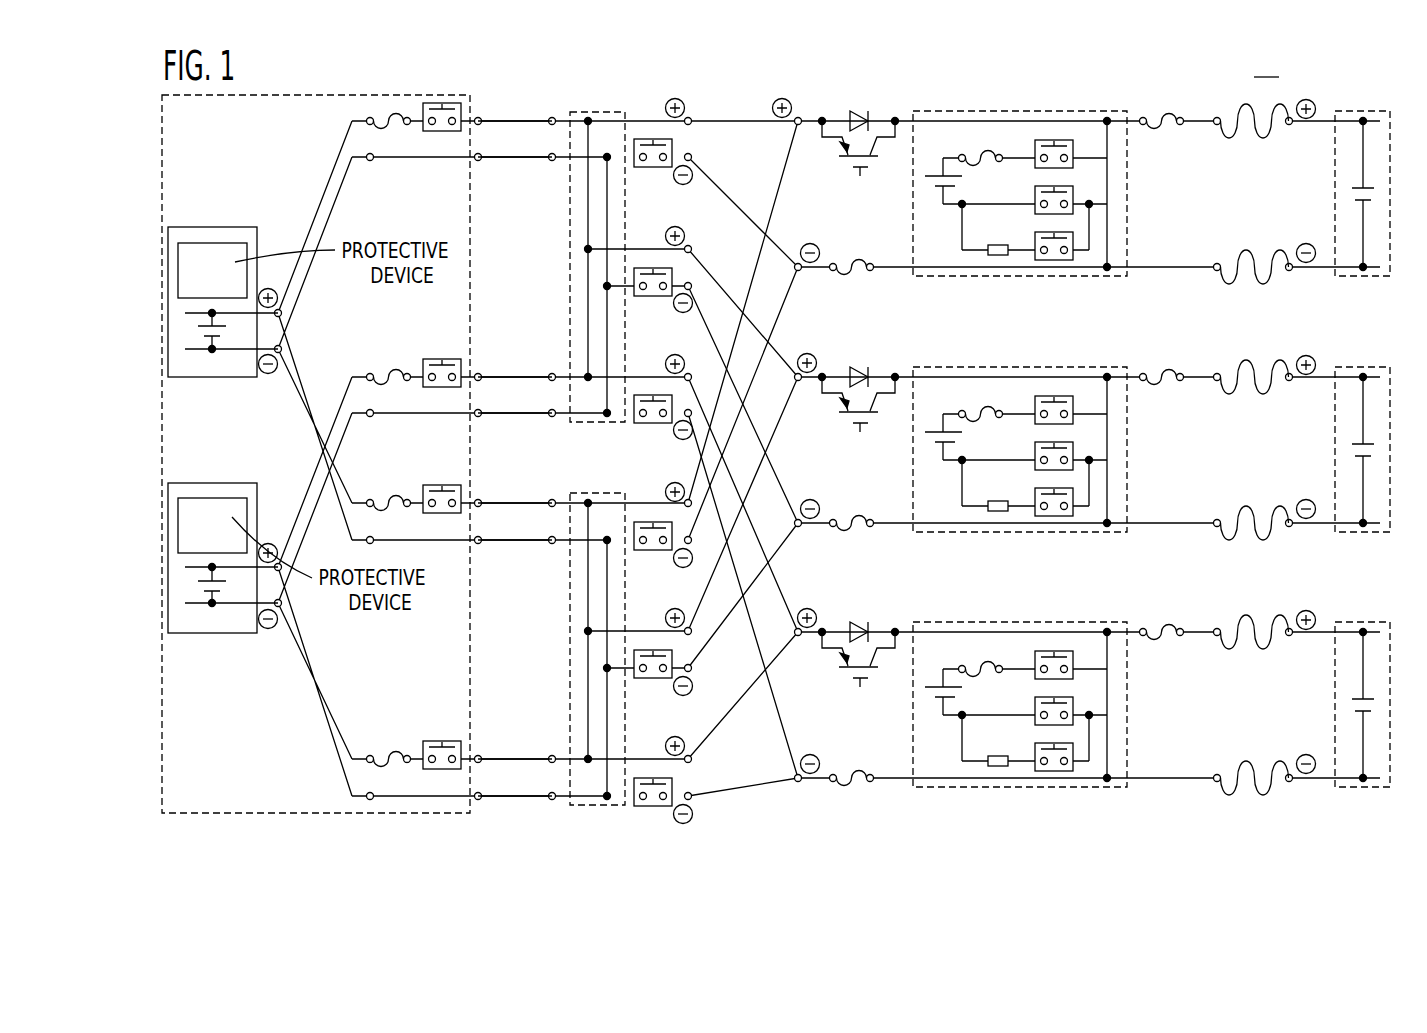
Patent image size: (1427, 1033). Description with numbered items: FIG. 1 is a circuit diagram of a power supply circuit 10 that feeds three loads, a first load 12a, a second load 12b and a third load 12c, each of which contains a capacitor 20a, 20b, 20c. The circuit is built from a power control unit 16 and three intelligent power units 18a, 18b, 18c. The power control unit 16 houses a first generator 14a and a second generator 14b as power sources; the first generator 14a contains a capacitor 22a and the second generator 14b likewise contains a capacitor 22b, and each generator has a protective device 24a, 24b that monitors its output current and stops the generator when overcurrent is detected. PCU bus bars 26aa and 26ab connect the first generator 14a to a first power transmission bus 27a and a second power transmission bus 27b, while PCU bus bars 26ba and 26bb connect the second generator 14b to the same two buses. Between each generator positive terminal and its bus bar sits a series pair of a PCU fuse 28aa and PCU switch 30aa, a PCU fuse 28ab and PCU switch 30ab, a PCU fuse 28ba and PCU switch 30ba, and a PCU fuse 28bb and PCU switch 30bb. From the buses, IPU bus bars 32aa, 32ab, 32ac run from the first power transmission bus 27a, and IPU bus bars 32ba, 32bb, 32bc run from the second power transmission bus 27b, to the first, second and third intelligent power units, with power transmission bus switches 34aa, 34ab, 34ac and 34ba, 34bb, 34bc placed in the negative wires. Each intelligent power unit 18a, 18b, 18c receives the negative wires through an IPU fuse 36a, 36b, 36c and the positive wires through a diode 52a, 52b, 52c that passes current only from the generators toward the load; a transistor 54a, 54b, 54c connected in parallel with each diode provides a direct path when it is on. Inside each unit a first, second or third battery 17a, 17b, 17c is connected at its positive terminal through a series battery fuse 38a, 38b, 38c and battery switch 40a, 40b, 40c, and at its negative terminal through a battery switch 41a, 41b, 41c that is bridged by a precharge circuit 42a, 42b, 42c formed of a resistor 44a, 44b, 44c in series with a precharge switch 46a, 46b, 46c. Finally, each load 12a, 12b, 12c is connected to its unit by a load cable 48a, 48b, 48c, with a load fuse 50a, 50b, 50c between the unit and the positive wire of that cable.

The power supply circuit 10 is at (1266, 64).
The first load 12a is at (1349, 111).
The second load 12b is at (1344, 427).
The third load 12c is at (1344, 682).
The first generator 14a is at (237, 227).
The second generator 14b is at (237, 483).
The power control unit 16 is at (287, 94).
The first battery 17a is at (933, 184).
The second battery 17b is at (942, 465).
The third battery 17c is at (943, 720).
The first intelligent power unit 18a is at (997, 111).
The second intelligent power unit 18b is at (1020, 421).
The third intelligent power unit 18c is at (1020, 676).
The capacitor 20a is at (1350, 197).
The capacitor 20b is at (1324, 448).
The capacitor 20c is at (1325, 703).
The capacitor 22a is at (188, 330).
The battery 22b is at (188, 585).
The protective device 24a is at (197, 243).
The protective device 24b is at (197, 498).
The PCU bus bar 26aa is at (527, 156).
The PCU bus bar 26ab is at (527, 539).
The PCU bus bar 26ba is at (527, 412).
The PCU bus bar 26bb is at (527, 795).
The first power transmission bus 27a is at (595, 112).
The second power transmission bus 27b is at (570, 590).
The PCU fuse 28aa is at (392, 110).
The PCU fuse 28ab is at (392, 492).
The PCU fuse 28ba is at (392, 366).
The PCU fuse 28bb is at (392, 748).
The PCU switch 30aa is at (443, 103).
The PCU switch 30ab is at (443, 485).
The PCU switch 30ba is at (443, 359).
The PCU switch 30bb is at (443, 741).
The IPU bus bar 32aa is at (703, 162).
The IPU bus bar 32ab is at (706, 294).
The IPU bus bar 32ac is at (701, 424).
The IPU bus bar 32ba is at (712, 490).
The IPU bus bar 32bb is at (700, 615).
The IPU bus bar 32bc is at (712, 790).
The power transmission bus switch 34aa is at (657, 168).
The power transmission bus switch 34ab is at (634, 278).
The power transmission bus switch 34ac is at (650, 424).
The power transmission bus switch 34ba is at (657, 551).
The power transmission bus switch 34bb is at (634, 658).
The power transmission bus switch 34bc is at (655, 777).
The IPU fuse 36a is at (851, 259).
The IPU fuse 36b is at (854, 501).
The IPU fuse 36c is at (854, 756).
The battery fuse 38a is at (993, 153).
The battery fuse 38b is at (966, 379).
The battery fuse 38c is at (967, 634).
The battery switch 40a is at (1053, 140).
The battery switch 40b is at (1055, 380).
The battery switch 40c is at (1054, 635).
The battery switch 41a is at (1035, 193).
The battery switch 41b is at (1023, 449).
The battery switch 41c is at (1023, 704).
The precharge circuit 42a is at (1018, 262).
The precharge circuit 42b is at (1027, 480).
The precharge circuit 42c is at (1027, 721).
The resistor 44a is at (998, 256).
The resistor 44b is at (993, 534).
The resistor 44c is at (993, 784).
The precharge switch 46a is at (1035, 238).
The precharge switch 46b is at (1023, 494).
The precharge switch 46c is at (1023, 749).
The load cable 48a is at (1240, 250).
The load cable 48b is at (1224, 450).
The load cable 48c is at (1225, 705).
The load fuse 50a is at (1170, 111).
The load fuse 50b is at (1169, 352).
The load fuse 50c is at (1169, 607).
The diode 52a is at (853, 112).
The diode 52b is at (859, 373).
The diode 52c is at (859, 628).
The transistor 54a is at (848, 177).
The transistor 54b is at (836, 438).
The transistor 54c is at (836, 693).